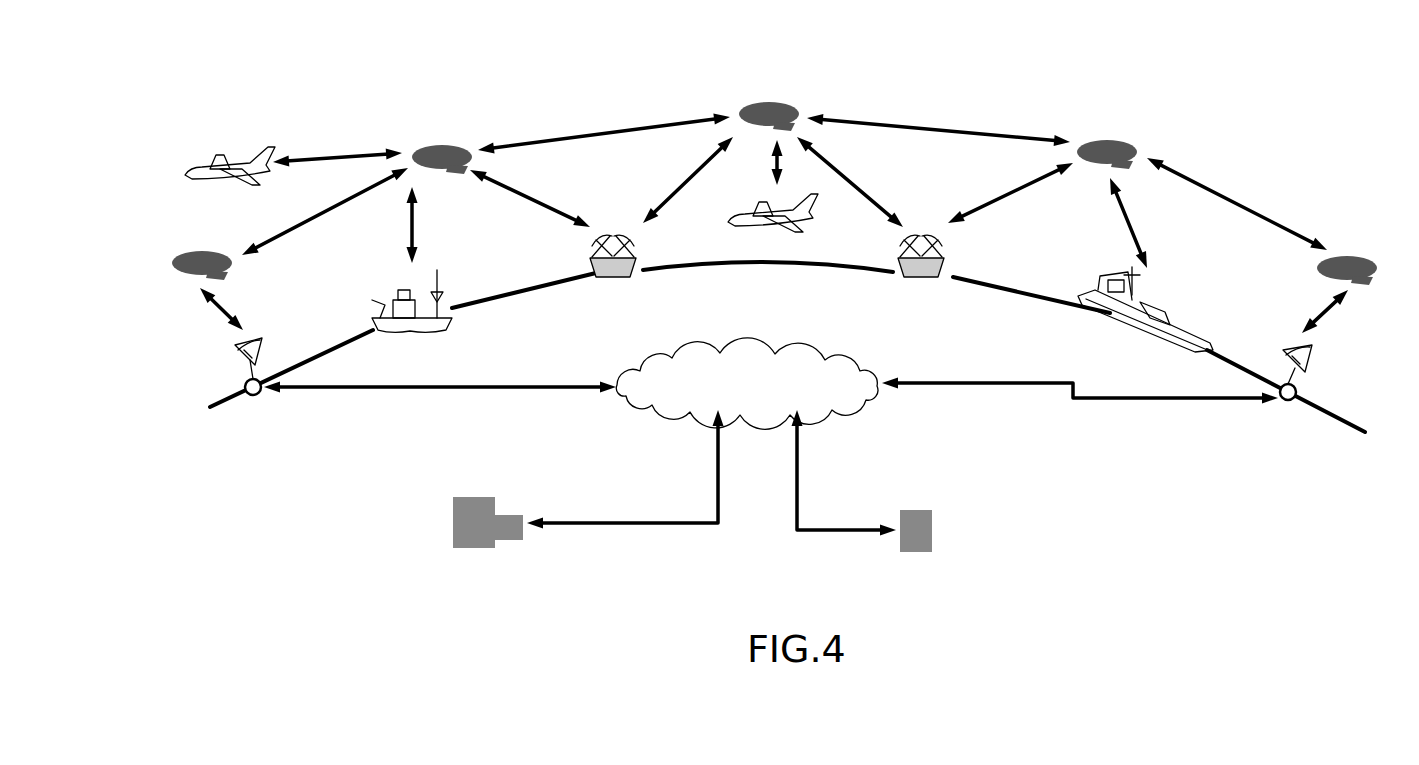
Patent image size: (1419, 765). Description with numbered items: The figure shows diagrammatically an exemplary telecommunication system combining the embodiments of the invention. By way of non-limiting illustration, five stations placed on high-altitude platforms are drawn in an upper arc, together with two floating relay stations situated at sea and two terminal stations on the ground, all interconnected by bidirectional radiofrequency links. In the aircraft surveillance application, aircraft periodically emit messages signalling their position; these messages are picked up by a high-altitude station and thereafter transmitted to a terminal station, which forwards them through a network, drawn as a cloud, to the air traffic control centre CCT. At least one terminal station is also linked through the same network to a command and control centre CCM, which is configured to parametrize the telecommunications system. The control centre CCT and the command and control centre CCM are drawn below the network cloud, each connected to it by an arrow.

The air traffic control centre CCT is at (453, 512).
The command and control centre CCM is at (933, 527).